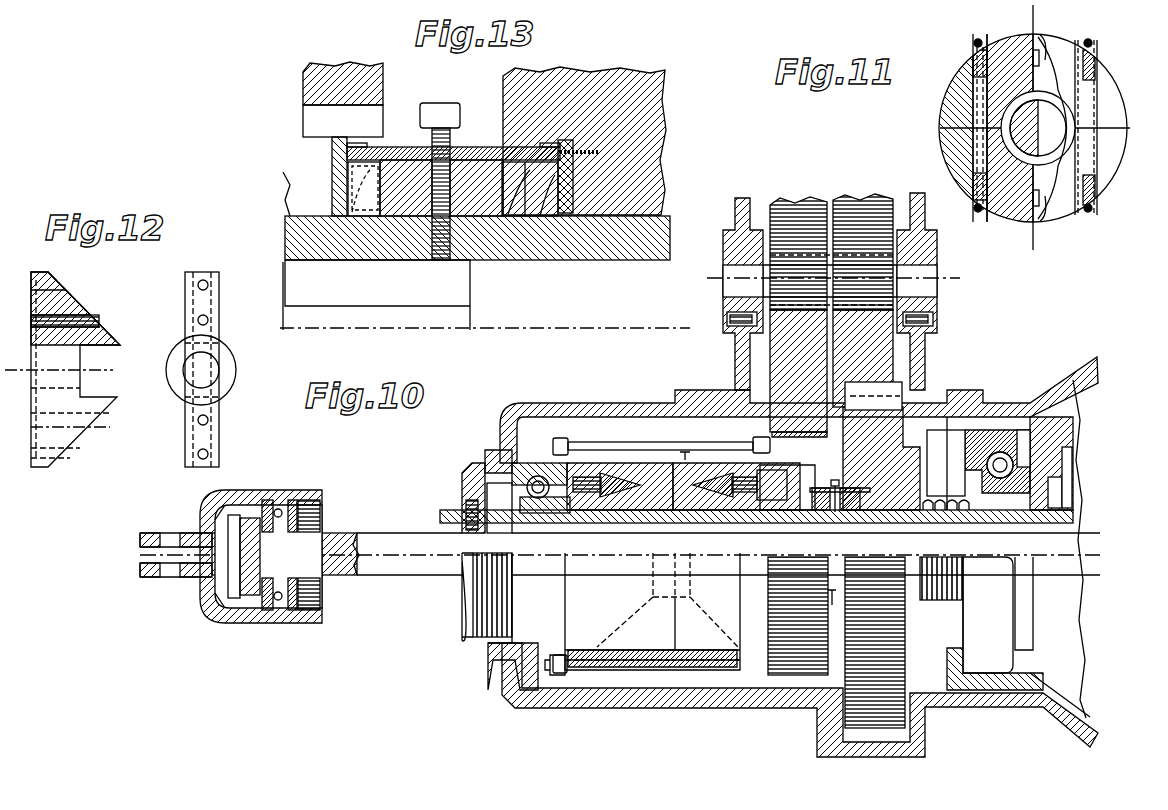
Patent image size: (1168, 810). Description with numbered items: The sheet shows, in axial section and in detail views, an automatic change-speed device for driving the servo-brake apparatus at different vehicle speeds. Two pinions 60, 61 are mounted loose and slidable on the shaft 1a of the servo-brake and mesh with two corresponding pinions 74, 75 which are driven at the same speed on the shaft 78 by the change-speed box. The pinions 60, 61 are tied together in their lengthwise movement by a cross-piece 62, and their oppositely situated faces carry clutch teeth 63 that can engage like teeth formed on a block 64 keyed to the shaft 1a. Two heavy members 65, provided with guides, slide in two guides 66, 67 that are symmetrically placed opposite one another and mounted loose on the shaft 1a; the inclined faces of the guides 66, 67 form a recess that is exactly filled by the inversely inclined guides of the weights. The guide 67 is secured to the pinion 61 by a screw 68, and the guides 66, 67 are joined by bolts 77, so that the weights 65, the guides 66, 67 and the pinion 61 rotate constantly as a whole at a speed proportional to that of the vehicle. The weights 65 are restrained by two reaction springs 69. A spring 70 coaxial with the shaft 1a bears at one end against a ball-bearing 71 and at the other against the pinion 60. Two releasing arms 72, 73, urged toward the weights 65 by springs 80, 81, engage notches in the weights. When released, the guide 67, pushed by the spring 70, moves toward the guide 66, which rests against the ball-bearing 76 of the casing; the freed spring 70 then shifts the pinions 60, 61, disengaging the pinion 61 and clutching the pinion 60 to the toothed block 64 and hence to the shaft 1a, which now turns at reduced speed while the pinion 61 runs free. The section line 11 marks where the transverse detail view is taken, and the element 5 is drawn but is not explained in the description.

In FIG. 13, the shaft 1a is at (512, 246).
In FIG. 11, the shaft 1a is at (1010, 160).
In FIG. 10, the shaft 1a is at (757, 515).
In FIG. 13, the shaft 5 is at (306, 318).
In FIG. 11, the shaft 5 is at (1025, 118).
In FIG. 10, the shaft 5 is at (433, 560).
In FIG. 10, the section line 11 is at (667, 548).
In FIG. 13, the pinion 60 is at (549, 92).
In FIG. 10, the pinion 60 is at (875, 700).
In FIG. 13, the pinion 61 is at (353, 84).
In FIG. 10, the pinion 61 is at (795, 655).
In FIG. 13, the cross-piece 62 is at (483, 152).
In FIG. 10, the cross-piece 62 is at (860, 480).
In FIG. 13, the clutch teeth 63 is at (367, 192).
In FIG. 10, the clutch teeth 63 is at (910, 504).
In FIG. 13, the block 64 is at (408, 202).
In FIG. 10, the block 64 is at (858, 520).
In FIG. 11, the heavy members 65 is at (1000, 54).
In FIG. 10, the heavy members 65 is at (648, 460).
In FIG. 12, the guide 66 is at (62, 304).
In FIG. 10, the guide 66 is at (585, 455).
In FIG. 10, the guide 67 is at (732, 395).
In FIG. 10, the screw 68 is at (775, 490).
In FIG. 11, the reaction springs 69 is at (975, 57).
In FIG. 10, the spring 70 is at (950, 583).
In FIG. 10, the ball-bearing 71 is at (1022, 492).
In FIG. 10, the releasing arm 72 is at (625, 497).
In FIG. 10, the releasing arm 73 is at (720, 500).
In FIG. 10, the pinion 74 is at (800, 208).
In FIG. 10, the pinion 75 is at (862, 207).
In FIG. 10, the ball-bearing 76 is at (530, 508).
In FIG. 10, the bolts 77 is at (615, 660).
In FIG. 10, the shaft 78 is at (928, 290).
In FIG. 10, the spring 80 is at (592, 476).
In FIG. 10, the spring 81 is at (744, 478).